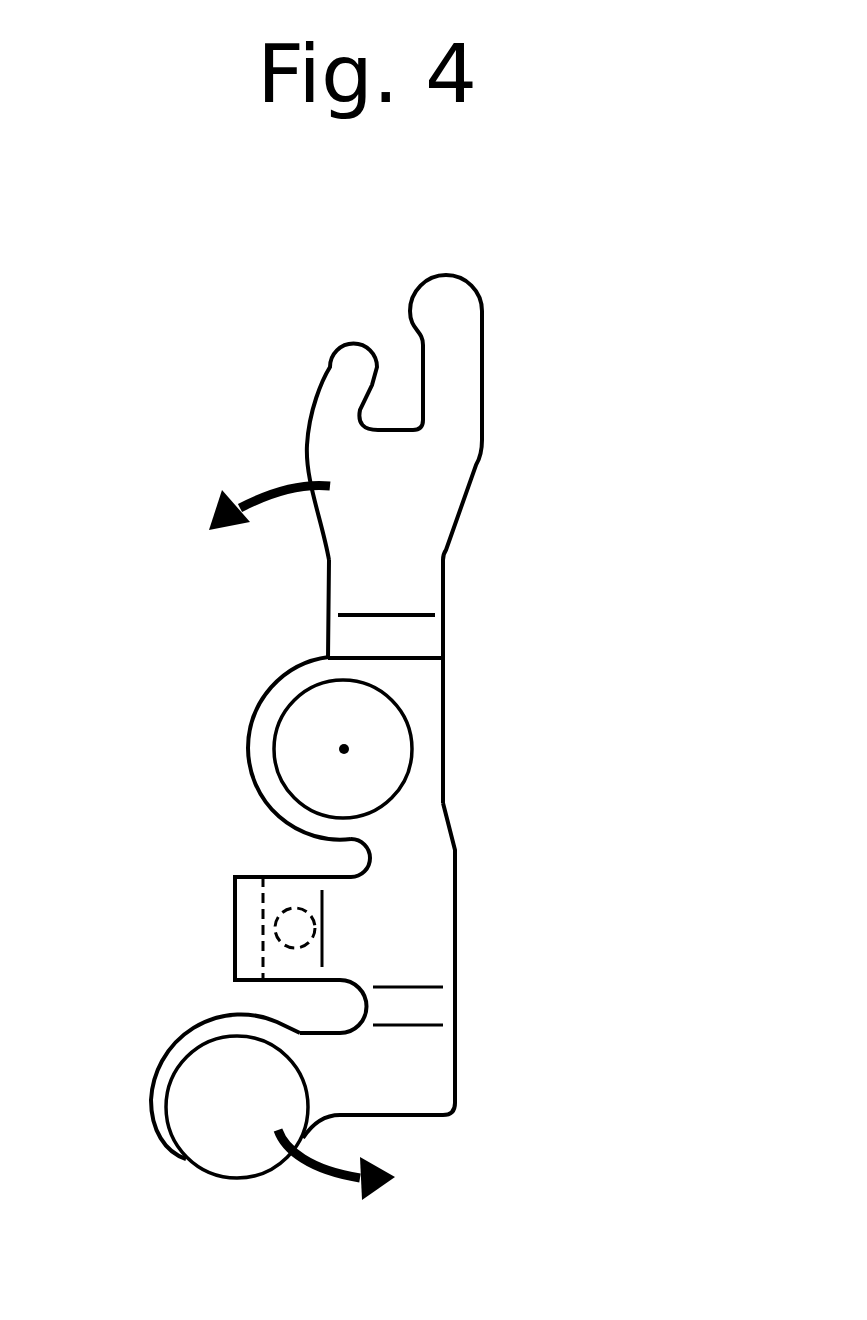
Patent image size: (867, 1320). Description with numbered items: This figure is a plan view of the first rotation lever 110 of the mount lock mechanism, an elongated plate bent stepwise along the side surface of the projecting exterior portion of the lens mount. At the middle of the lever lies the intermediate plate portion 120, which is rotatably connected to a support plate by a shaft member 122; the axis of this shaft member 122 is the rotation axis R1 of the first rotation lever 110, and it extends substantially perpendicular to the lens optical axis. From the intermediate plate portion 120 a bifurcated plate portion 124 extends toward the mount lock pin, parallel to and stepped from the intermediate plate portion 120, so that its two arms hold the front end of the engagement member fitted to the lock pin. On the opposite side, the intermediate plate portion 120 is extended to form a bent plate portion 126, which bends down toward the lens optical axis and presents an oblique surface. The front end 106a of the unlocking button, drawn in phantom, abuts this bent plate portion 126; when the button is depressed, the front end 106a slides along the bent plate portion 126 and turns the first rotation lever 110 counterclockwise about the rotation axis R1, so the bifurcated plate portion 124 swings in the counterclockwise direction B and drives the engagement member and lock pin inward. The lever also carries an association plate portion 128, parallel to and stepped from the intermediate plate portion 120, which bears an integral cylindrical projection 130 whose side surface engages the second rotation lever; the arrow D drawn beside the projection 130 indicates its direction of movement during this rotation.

The first rotation lever 110 is at (612, 500).
The bifurcated plate portion 124 is at (468, 427).
The intermediate plate portion 120 is at (434, 699).
The shaft member 122 is at (393, 755).
The rotation axis R1 is at (343, 749).
The bent plate portion 126 is at (297, 885).
The front end of the unlocking button 106a is at (275, 929).
The association plate portion 128 is at (450, 1067).
The projection 130 is at (235, 1167).
The counterclockwise direction B is at (248, 517).
The direction D is at (350, 1180).